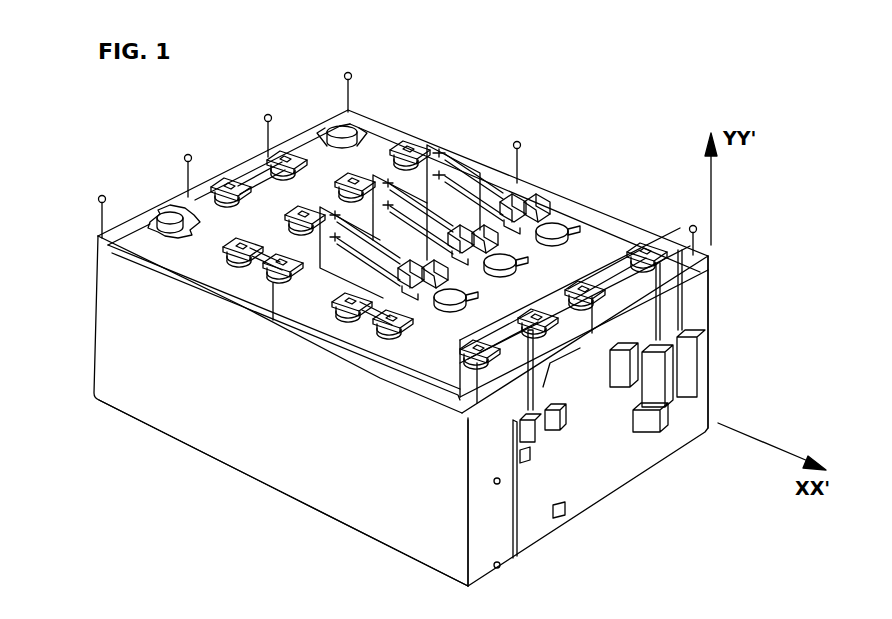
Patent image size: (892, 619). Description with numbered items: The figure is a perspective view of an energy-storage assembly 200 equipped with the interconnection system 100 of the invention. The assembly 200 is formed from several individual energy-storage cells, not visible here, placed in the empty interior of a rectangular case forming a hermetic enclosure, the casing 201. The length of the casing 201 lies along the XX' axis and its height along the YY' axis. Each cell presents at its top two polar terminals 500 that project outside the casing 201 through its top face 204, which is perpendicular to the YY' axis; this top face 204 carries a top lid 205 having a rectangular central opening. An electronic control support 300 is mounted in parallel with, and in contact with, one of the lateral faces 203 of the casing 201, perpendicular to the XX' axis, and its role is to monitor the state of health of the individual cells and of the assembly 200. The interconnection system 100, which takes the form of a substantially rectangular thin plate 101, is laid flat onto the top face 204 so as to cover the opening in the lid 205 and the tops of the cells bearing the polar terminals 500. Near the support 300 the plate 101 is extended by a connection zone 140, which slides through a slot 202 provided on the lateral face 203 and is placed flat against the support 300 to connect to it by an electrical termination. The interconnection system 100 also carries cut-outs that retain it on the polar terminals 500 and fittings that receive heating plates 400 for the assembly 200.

The interconnection system 100 is at (166, 243).
The thin plate 101 is at (210, 240).
The connection zone 140 is at (577, 355).
The energy-storage assembly 200 is at (353, 497).
The casing 201 is at (420, 523).
The slot 202 is at (553, 368).
The lateral face 203 is at (500, 528).
The top face 204 is at (547, 196).
The top lid 205 is at (387, 135).
The electronic control support 300 is at (681, 451).
The heating plates 400 is at (347, 257).
The polar terminals 500 is at (168, 216).